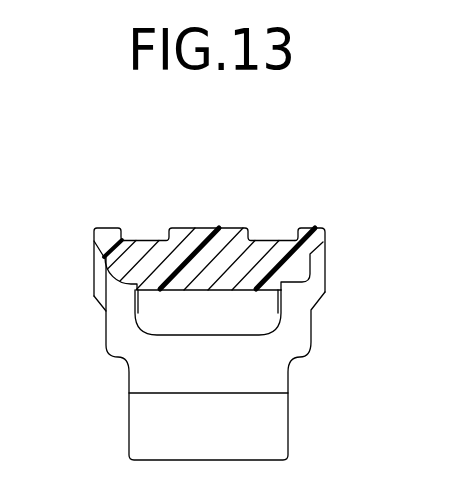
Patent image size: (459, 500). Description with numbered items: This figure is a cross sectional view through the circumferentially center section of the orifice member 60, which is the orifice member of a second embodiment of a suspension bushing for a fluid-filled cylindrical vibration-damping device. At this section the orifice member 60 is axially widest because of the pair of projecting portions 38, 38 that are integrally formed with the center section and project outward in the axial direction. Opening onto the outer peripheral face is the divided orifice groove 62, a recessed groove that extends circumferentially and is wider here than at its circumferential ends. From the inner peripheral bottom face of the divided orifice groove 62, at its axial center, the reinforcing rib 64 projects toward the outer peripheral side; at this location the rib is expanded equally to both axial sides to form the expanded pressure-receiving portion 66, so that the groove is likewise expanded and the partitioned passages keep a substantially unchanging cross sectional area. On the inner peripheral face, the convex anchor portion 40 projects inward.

The orifice member 60 is at (308, 195).
The divided orifice groove 62 is at (124, 238).
The reinforcing rib 64 is at (210, 230).
The expanded pressure-receiving portion 66 is at (210, 236).
The projecting portions 38 is at (103, 236).
The anchor portion 40 is at (163, 309).